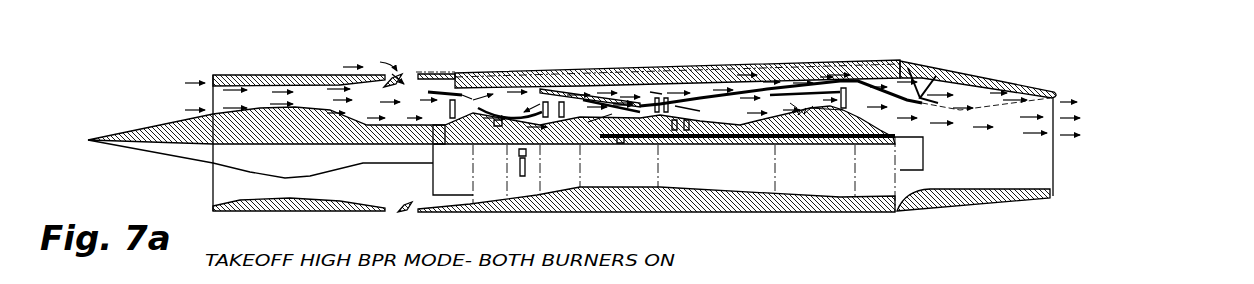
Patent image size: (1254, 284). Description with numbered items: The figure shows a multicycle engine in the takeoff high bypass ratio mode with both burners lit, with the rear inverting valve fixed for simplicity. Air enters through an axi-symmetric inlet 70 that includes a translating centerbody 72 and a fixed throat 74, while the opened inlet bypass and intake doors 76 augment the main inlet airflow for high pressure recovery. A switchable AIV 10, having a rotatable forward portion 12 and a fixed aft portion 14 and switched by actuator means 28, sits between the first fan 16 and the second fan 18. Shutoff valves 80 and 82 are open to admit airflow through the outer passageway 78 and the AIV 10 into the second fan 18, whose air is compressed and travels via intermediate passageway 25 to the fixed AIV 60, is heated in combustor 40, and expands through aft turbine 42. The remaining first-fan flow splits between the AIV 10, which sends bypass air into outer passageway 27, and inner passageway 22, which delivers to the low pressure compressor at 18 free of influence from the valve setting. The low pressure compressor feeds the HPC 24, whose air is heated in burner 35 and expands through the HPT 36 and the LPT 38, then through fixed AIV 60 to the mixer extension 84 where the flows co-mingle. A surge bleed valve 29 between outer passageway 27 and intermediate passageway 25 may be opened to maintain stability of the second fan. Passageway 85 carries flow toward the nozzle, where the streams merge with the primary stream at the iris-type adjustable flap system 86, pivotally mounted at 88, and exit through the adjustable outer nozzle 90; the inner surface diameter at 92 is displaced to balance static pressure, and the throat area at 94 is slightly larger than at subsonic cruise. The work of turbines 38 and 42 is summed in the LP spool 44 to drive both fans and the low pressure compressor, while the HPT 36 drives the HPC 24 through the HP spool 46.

The switchable AIV 10 is at (513, 62).
The rotatable forward portion 12 is at (456, 100).
The fixed aft portion 14 is at (525, 92).
The Fan 1 16 is at (460, 95).
The Fan 2 18 is at (583, 100).
The inner passageway 22 is at (498, 126).
The compressor 24 is at (590, 122).
The intermediate passageway 25 is at (680, 110).
The outer passageway 27 is at (657, 98).
The actuator means 28 is at (522, 178).
The surge bleed valve 29 is at (655, 103).
The burner 35 is at (658, 90).
The HPT stages 36 is at (672, 130).
The LPT stages 38 is at (688, 130).
The combustor 40 is at (800, 100).
The aft turbine 42 is at (845, 98).
The LP spool 44 is at (800, 128).
The HP spool 46 is at (620, 143).
The fixed AIV 60 is at (737, 83).
The axi-symmetric inlet 70 is at (250, 211).
The translating centerbody 72 is at (152, 152).
The fixed throat 74 is at (300, 75).
The inlet bypass and intake doors 76 is at (400, 70).
The outer passageway 78 is at (445, 91).
The shutoff valve 80 is at (428, 74).
The shutoff valve 82 is at (565, 88).
The flow divider extension 84 is at (773, 80).
The passageway 85 is at (826, 88).
The adjustable flap system 86 is at (940, 77).
The pivot 88 is at (913, 70).
The outer nozzle 90 is at (1017, 80).
The inner nozzle surface diameter 92 is at (957, 78).
The nozzle throat area 94 is at (1057, 96).